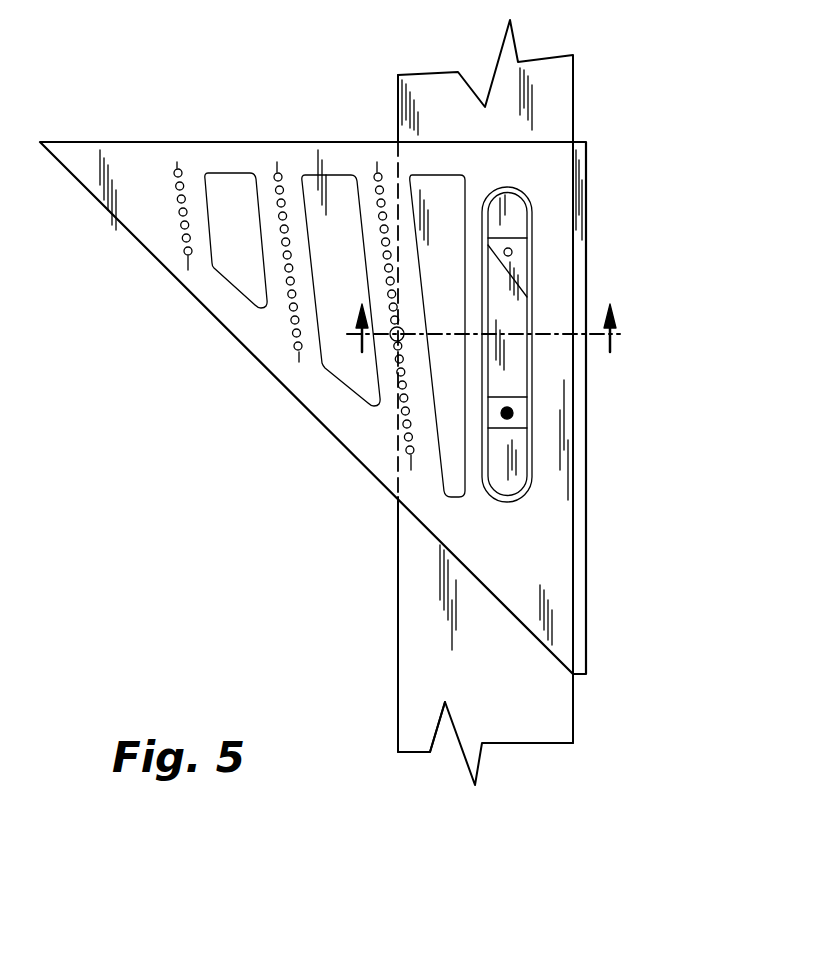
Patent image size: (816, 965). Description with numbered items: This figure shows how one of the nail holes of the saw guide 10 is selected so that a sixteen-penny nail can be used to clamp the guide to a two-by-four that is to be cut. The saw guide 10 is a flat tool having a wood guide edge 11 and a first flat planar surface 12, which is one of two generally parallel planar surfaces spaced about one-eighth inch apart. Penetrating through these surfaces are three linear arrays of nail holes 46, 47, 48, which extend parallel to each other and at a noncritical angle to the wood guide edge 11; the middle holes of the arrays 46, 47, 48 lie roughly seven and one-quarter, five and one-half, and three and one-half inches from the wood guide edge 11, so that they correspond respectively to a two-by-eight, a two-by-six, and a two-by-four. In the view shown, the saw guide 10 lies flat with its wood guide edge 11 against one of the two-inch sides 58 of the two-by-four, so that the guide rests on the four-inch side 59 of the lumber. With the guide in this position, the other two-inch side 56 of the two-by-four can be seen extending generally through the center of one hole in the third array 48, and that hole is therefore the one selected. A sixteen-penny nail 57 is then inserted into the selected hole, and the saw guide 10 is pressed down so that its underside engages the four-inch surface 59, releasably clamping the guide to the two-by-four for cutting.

The saw guide 10 is at (248, 465).
The wood guide edge 11 is at (583, 205).
The first flat planar surface 12 is at (138, 245).
The first linear array of nail holes 46 is at (180, 192).
The second linear array of nail holes 47 is at (280, 215).
The third linear array of nail holes 48 is at (393, 277).
The other 2-inch side of the 2×4 56 is at (395, 507).
The 16 penny nail 57 is at (392, 339).
The 2-inch side of the 2×4 58 is at (573, 698).
The 4-inch side of the 2×4 59 is at (433, 667).